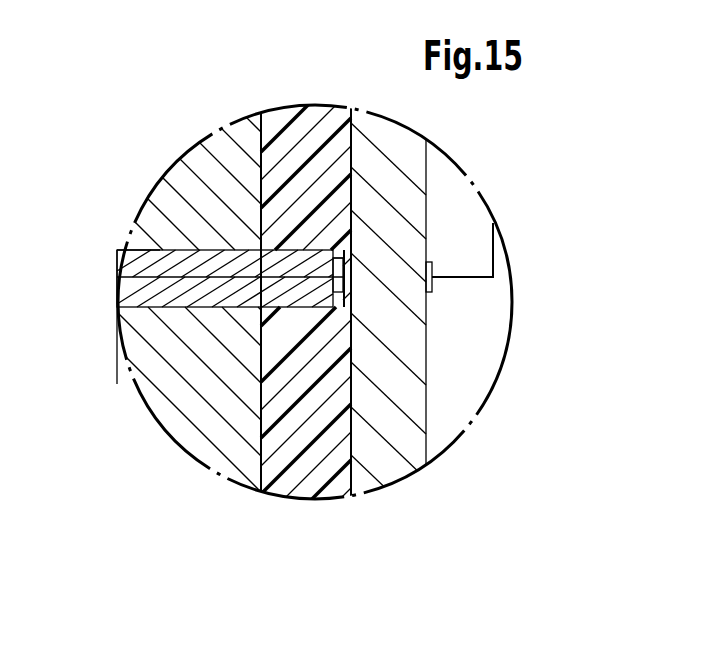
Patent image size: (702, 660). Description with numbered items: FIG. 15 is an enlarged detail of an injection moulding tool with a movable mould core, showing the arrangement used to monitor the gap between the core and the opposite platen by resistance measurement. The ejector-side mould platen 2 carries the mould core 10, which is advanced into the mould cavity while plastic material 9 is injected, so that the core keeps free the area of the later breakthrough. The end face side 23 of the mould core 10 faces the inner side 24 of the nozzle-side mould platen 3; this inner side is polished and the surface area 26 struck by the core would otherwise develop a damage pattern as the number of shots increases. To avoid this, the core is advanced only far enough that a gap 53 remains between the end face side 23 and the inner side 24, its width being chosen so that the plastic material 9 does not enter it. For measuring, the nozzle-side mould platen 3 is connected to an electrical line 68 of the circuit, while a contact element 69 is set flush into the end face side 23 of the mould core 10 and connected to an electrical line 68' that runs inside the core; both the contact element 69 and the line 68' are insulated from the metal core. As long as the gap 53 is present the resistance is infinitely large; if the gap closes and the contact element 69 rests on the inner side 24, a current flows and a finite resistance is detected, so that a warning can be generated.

The ejector-side mould platen 2 is at (190, 397).
The nozzle-side mould platen 3 is at (388, 427).
The plastic material 9 is at (299, 466).
The mould core 10 is at (138, 294).
The end face side 23 is at (343, 295).
The inner side 24 is at (348, 460).
The surface area 26 is at (350, 273).
The gap 53 is at (350, 263).
The electrical line 68 is at (498, 271).
The electrical line 68' is at (116, 222).
The contact element 69 is at (333, 263).